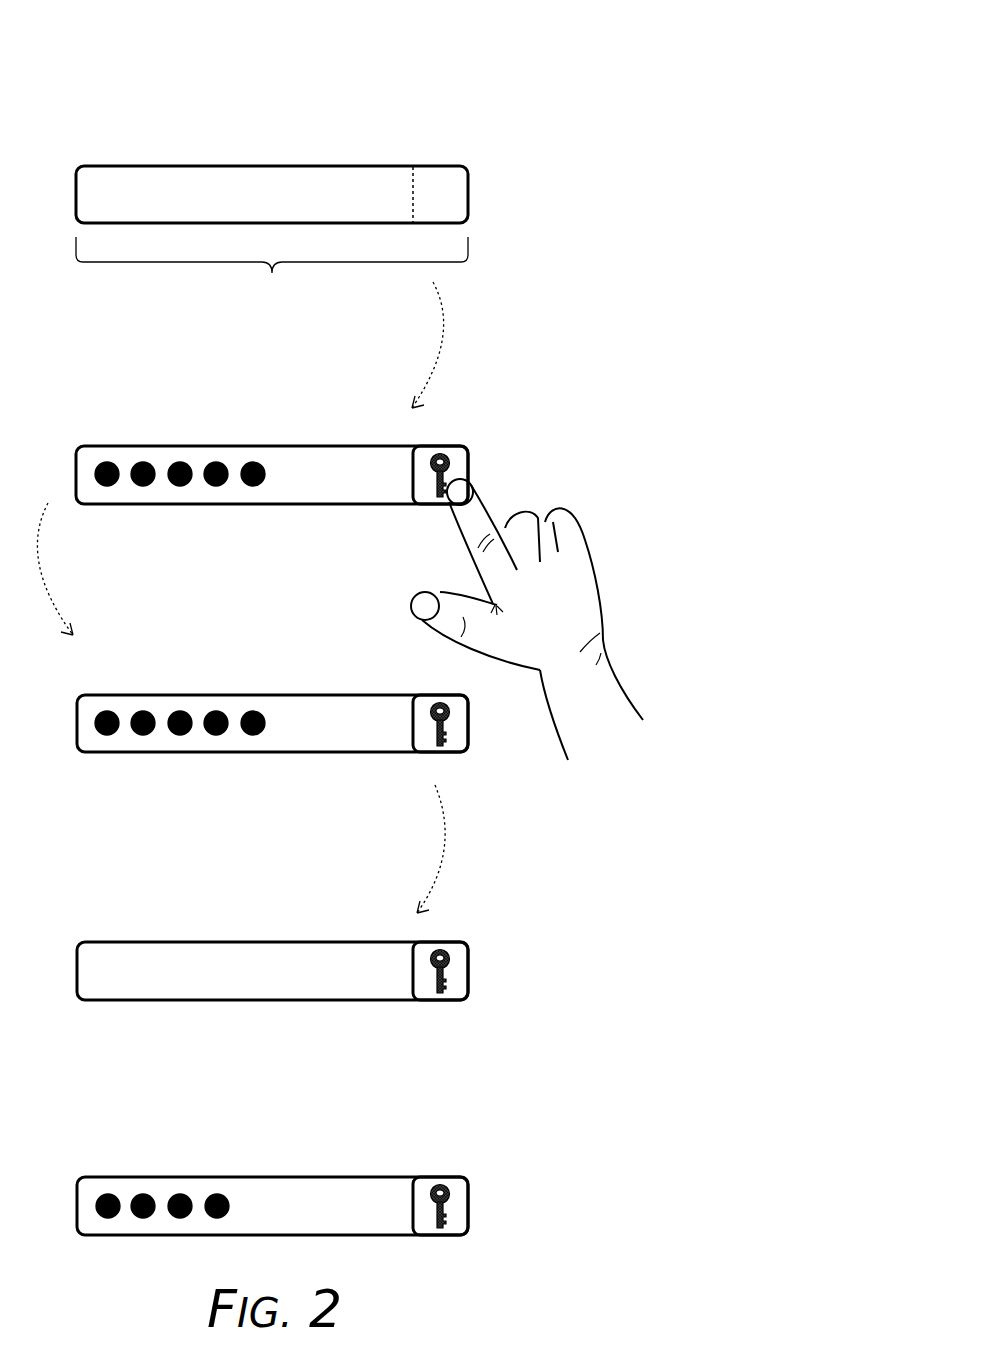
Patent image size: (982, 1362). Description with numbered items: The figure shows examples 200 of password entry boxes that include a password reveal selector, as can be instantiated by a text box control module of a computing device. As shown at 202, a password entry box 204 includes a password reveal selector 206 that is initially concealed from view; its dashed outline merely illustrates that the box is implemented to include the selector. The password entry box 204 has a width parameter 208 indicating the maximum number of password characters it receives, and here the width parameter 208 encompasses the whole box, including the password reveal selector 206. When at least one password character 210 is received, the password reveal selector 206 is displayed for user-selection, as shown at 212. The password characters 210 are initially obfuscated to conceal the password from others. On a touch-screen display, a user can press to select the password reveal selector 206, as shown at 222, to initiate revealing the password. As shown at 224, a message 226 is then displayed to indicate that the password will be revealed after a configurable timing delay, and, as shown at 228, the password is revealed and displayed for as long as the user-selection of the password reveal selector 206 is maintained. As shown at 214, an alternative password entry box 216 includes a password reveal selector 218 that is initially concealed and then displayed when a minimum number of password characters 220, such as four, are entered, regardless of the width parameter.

The examples of password entry boxes 200 is at (559, 68).
The initial display state 202 is at (366, 97).
The password entry box 204 is at (132, 165).
The password reveal selector 206 is at (438, 163).
The width parameter 208 is at (290, 308).
The password characters 210 is at (234, 458).
The selector displayed state 212 is at (193, 388).
The alternative example state 214 is at (368, 1107).
The alternative password entry box 216 is at (130, 1177).
The password reveal selector 218 is at (440, 1178).
The password characters 220 is at (200, 1190).
The user selection 222 is at (503, 465).
The message display state 224 is at (178, 617).
The message 226 is at (298, 648).
The password revealed state 228 is at (169, 870).